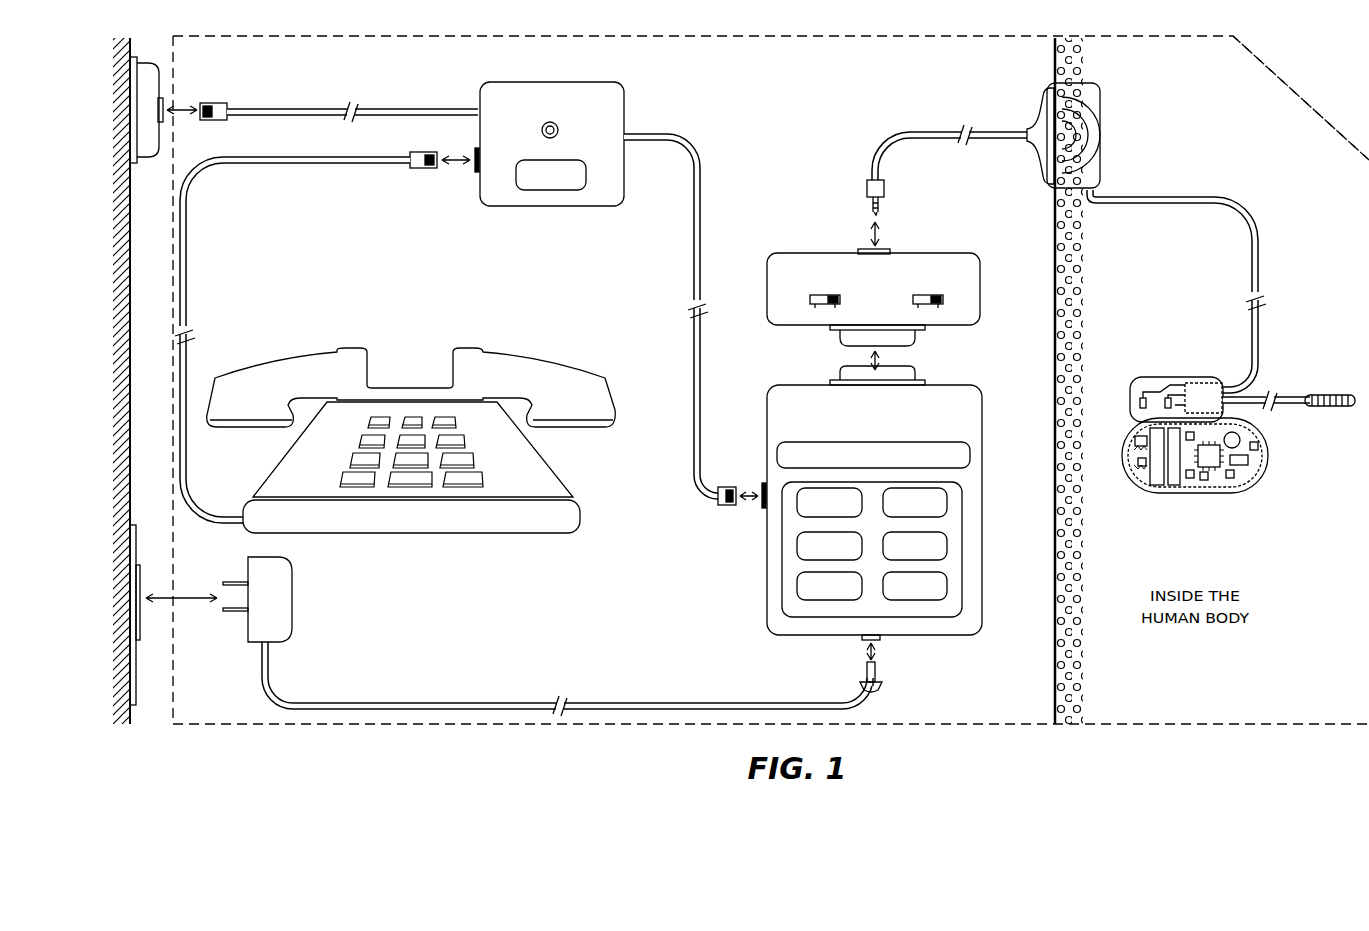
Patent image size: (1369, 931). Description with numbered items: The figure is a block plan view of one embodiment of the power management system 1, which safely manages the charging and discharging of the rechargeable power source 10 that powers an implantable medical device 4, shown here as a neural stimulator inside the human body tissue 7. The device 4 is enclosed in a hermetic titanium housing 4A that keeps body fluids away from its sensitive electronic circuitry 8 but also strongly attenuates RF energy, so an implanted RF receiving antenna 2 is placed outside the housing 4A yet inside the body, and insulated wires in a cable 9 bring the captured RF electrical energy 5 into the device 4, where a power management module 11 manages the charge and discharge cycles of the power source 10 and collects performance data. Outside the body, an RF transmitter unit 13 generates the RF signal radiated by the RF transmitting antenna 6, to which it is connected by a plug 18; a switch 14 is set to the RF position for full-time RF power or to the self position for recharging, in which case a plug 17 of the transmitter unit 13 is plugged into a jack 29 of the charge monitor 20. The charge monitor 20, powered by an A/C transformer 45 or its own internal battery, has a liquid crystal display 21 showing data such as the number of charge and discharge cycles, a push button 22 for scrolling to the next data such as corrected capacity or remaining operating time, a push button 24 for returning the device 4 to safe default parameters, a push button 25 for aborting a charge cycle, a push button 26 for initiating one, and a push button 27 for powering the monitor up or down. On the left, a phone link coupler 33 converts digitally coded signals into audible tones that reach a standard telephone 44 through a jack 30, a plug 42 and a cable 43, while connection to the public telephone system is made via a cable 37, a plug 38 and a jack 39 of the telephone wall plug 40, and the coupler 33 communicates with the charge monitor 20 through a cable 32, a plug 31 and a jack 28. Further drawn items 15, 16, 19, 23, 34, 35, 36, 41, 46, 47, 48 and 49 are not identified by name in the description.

The power management system 1 is at (1315, 106).
The RF receiving antenna 2 is at (1100, 92).
The implantable medical device 4 is at (1210, 465).
The hermetic titanium housing 4A is at (1214, 495).
The RF electrical energy 5 is at (1104, 127).
The RF transmitting antenna 6 is at (1044, 178).
The human body tissue 7 is at (1053, 672).
The electronic circuitry 8 is at (1246, 483).
The cable 9 is at (1259, 250).
The power source 10 is at (1160, 475).
The power management module 11 is at (1134, 462).
The RF transmitter unit 13 is at (886, 287).
The switch 14 is at (940, 296).
The stimulation switch 15 is at (810, 300).
The transmitter connector 16 is at (890, 250).
The plug 17 is at (918, 338).
The plug 18 is at (886, 190).
The coil cable 19 is at (926, 132).
The charge monitor 20 is at (883, 523).
The liquid crystal display 21 is at (968, 444).
The push button 22 is at (944, 506).
The stim time button 23 is at (944, 550).
The push button 24 is at (944, 595).
The push button 25 is at (800, 594).
The push button 26 is at (800, 553).
The push button 27 is at (800, 512).
The jack 28 is at (761, 508).
The jack 29 is at (918, 372).
The jack 30 is at (865, 641).
The plug 31 is at (720, 506).
The cable 32 is at (700, 150).
The phone link coupler 33 is at (583, 212).
The power on/off switch 34 is at (542, 192).
The ready indicator 35 is at (560, 128).
The phone line port 36 is at (473, 174).
The cable 37 is at (312, 108).
The plug 38 is at (215, 100).
The jack 39 is at (198, 128).
The telephone wall plug 40 is at (151, 160).
The wall 41 is at (156, 292).
The plug 42 is at (418, 170).
The cable 43 is at (194, 250).
The standard telephone 44 is at (494, 535).
The A/C transformer 45 is at (293, 594).
The power cord 46 is at (512, 700).
The power plug 47 is at (878, 672).
The wall outlet 48 is at (142, 638).
The electrode lead 49 is at (1348, 394).